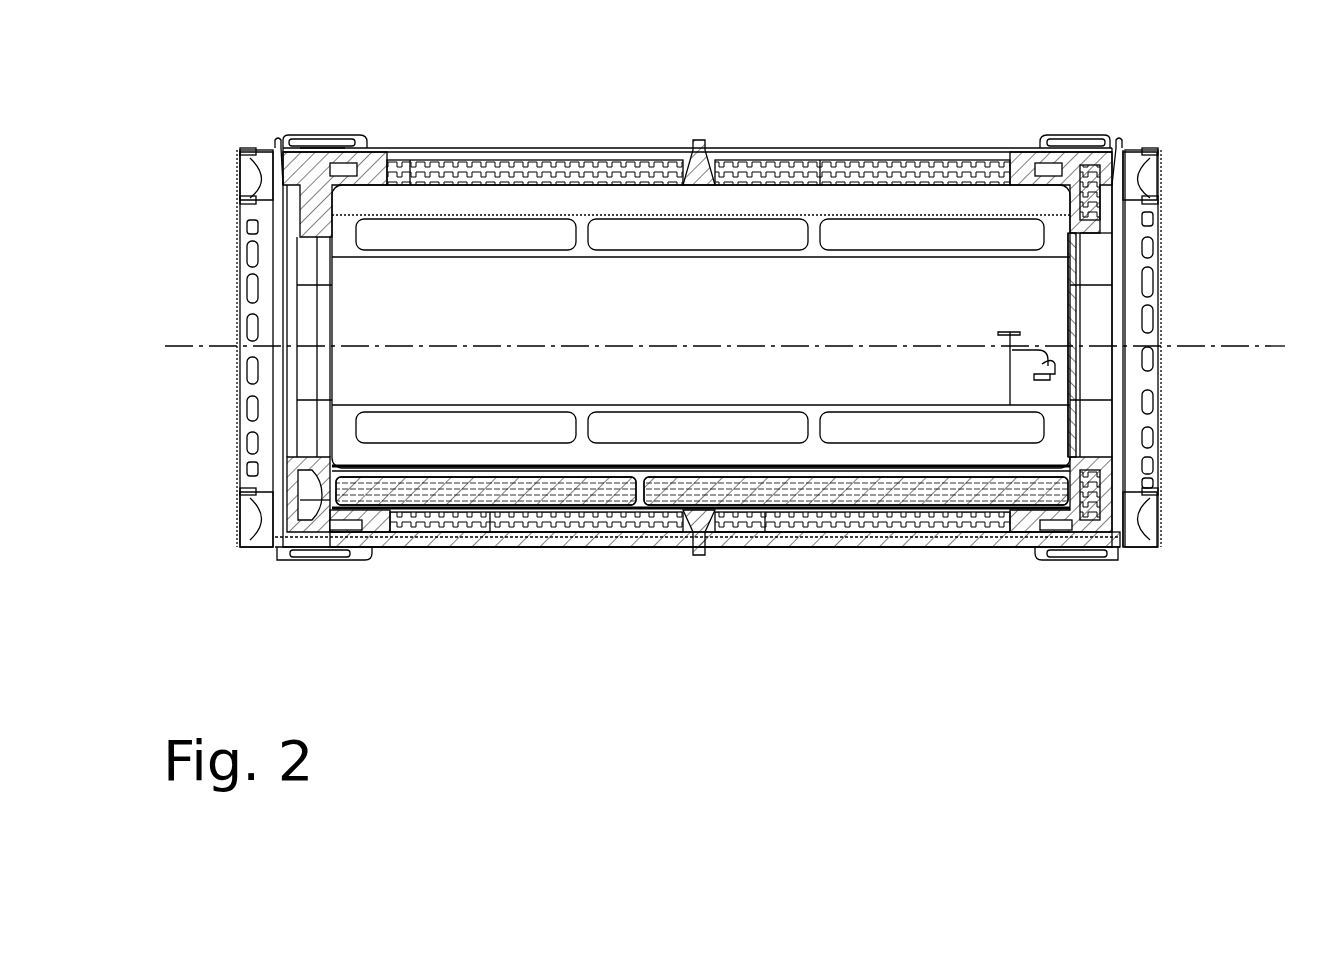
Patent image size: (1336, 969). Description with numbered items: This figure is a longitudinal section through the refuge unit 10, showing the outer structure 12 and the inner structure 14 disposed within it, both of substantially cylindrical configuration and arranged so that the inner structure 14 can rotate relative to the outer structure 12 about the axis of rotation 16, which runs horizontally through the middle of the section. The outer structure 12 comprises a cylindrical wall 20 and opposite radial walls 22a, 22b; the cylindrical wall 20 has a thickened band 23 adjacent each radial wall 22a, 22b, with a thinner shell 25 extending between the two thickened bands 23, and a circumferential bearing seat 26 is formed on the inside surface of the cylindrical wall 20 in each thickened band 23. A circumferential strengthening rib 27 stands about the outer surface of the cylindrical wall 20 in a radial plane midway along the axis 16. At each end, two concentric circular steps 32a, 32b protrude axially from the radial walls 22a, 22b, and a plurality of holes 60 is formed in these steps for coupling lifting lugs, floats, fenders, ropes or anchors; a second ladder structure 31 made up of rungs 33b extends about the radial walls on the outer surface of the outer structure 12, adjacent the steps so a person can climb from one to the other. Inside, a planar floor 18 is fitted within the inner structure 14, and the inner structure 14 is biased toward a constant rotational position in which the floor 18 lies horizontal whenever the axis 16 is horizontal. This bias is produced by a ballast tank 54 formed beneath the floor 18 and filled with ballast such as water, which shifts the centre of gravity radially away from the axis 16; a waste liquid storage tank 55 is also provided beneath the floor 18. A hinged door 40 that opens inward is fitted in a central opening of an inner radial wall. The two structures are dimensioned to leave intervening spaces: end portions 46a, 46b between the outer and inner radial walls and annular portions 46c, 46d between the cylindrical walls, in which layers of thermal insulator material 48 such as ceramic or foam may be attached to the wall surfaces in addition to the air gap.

The refuge unit 10 is at (665, 116).
The outer structure 12 is at (550, 148).
The inner structure 14 is at (302, 237).
The axis of rotation 16 is at (1282, 350).
The floor 18 is at (781, 422).
The cylindrical wall 20 is at (665, 548).
The radial wall 22a is at (1158, 492).
The radial wall 22b is at (247, 489).
The thickened band 23 is at (283, 178).
The shell 25 is at (910, 146).
The bearing seat 26 is at (347, 173).
The circumferential strengthening rib 27 is at (702, 142).
The second ladder structure 31 is at (345, 118).
The circular step 32a is at (240, 200).
The circular step 32b is at (238, 150).
The rungs 33b is at (355, 551).
The door 40 is at (1080, 298).
The end portion of space 46a is at (1123, 554).
The end portion of space 46b is at (303, 488).
The annular portion of space 46c is at (480, 170).
The annular portion of space 46d is at (765, 158).
The thermal insulator material 48 is at (1108, 454).
The ballast tank 54 is at (915, 492).
The waste liquid storage tank 55 is at (545, 490).
The holes 60 is at (1155, 340).